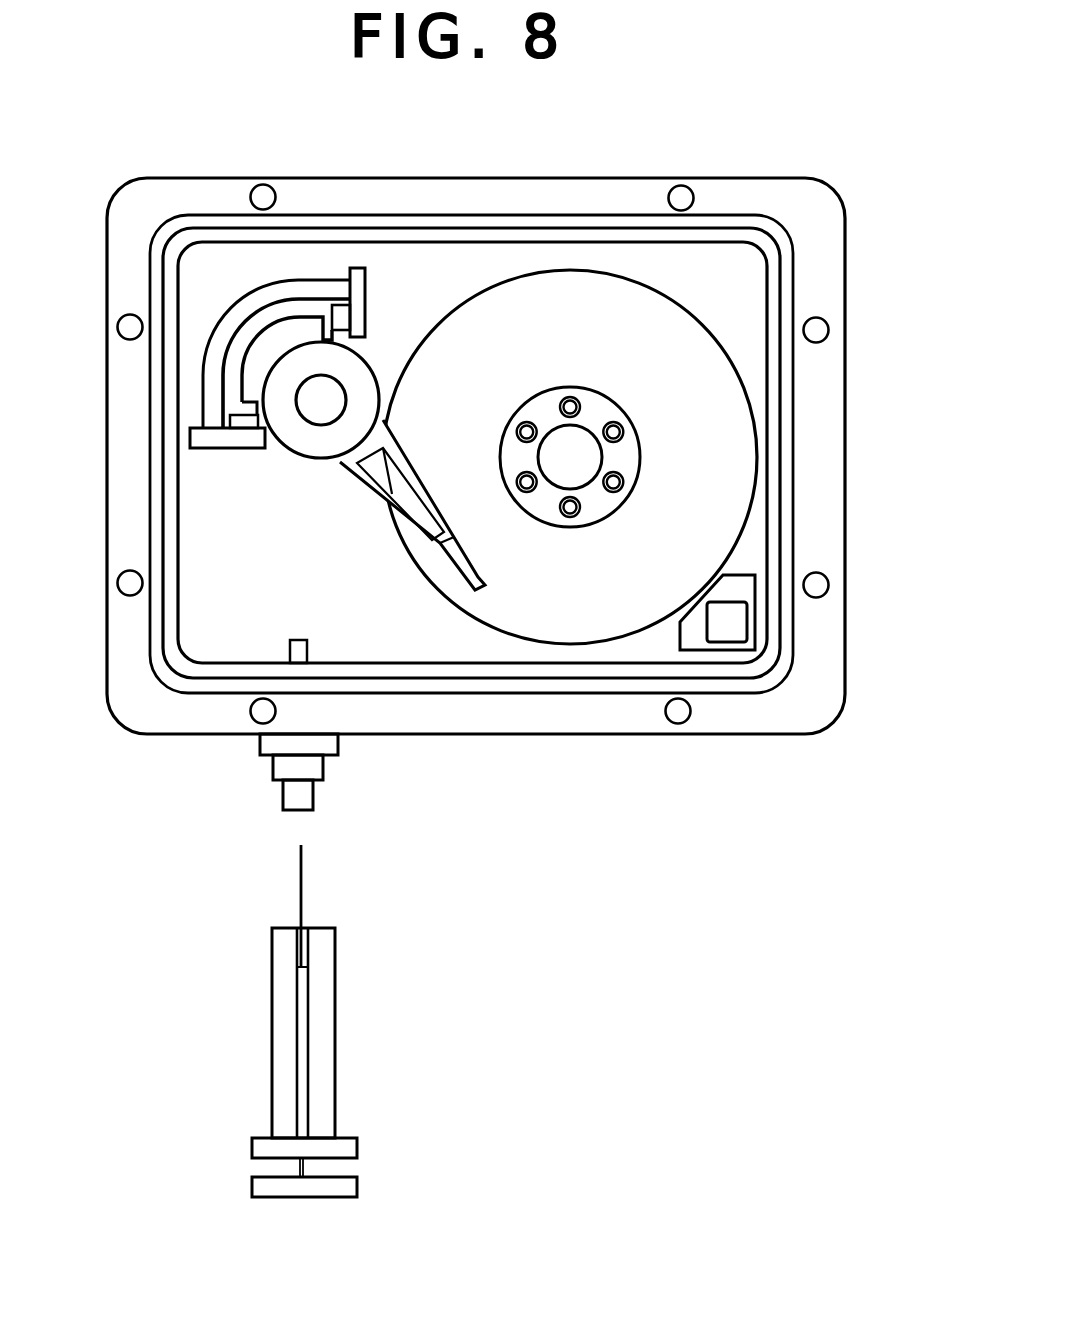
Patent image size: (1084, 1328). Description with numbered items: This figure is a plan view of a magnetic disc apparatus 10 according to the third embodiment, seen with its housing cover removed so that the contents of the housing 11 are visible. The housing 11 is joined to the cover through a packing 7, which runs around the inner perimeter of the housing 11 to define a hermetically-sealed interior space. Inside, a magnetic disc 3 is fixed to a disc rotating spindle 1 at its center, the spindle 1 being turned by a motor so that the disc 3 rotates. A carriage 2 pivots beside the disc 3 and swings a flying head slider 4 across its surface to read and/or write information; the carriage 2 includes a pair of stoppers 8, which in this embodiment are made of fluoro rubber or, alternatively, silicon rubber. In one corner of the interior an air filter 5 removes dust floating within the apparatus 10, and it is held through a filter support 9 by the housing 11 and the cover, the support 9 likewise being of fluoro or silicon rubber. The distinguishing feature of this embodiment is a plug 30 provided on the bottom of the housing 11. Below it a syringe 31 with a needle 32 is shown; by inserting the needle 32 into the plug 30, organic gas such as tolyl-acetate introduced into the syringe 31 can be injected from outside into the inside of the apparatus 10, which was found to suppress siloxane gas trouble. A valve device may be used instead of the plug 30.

The disc rotating spindle 1 is at (585, 388).
The carriage 2 is at (380, 380).
The magnetic disc 3 is at (710, 332).
The flying head slider 4 is at (476, 590).
The air filter 5 is at (757, 636).
The packing 7 is at (796, 393).
The stopper 8 is at (332, 308).
The filter support 9 is at (749, 620).
The magnetic disc apparatus 10 is at (848, 227).
The housing 11 is at (832, 443).
The plug 30 is at (315, 793).
The syringe 31 is at (337, 1097).
The needle 32 is at (303, 893).